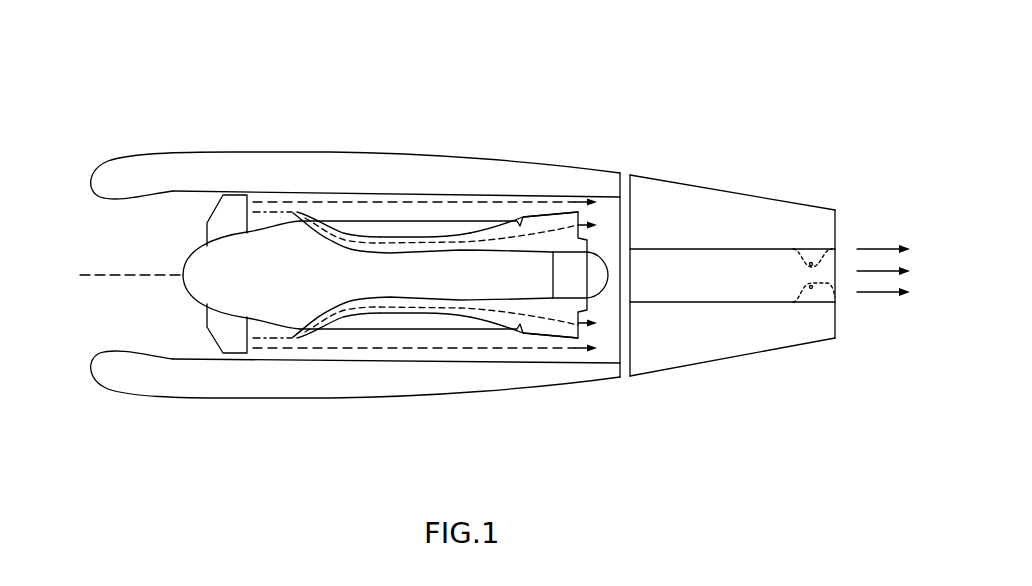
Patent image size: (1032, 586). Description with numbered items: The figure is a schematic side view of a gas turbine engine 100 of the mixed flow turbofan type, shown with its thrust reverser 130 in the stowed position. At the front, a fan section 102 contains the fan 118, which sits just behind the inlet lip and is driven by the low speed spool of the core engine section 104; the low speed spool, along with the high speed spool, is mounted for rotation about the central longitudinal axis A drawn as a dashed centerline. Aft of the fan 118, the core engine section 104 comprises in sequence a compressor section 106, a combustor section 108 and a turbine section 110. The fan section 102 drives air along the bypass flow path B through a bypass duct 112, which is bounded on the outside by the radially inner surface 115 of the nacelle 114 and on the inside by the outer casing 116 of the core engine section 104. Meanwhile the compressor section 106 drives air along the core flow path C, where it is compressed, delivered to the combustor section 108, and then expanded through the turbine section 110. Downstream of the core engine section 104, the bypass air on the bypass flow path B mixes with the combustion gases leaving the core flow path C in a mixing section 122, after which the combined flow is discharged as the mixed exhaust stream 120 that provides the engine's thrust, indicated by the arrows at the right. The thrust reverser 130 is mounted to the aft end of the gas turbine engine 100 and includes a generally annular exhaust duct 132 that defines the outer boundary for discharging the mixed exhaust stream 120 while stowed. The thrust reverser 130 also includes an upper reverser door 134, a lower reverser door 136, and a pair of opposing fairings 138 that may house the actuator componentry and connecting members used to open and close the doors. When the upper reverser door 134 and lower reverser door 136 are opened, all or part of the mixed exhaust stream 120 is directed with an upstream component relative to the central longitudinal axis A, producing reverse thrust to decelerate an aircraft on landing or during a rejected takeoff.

The gas turbine engine 100 is at (104, 100).
The fan section 102 is at (179, 218).
The core engine section 104 is at (320, 259).
The compressor section 106 is at (345, 218).
The combustor section 108 is at (442, 218).
The turbine section 110 is at (528, 201).
The bypass duct 112 is at (345, 350).
The nacelle 114 is at (196, 383).
The radially inner surface 115 is at (397, 361).
The outer casing 116 is at (437, 331).
The fan 118 is at (207, 340).
The mixed exhaust stream 120 is at (878, 249).
The mixing section 122 is at (605, 212).
The thrust reverser 130 is at (733, 238).
The exhaust duct 132 is at (830, 338).
The upper reverser door 134 is at (742, 196).
The lower reverser door 136 is at (702, 365).
The fairings 138 is at (770, 295).
The central longitudinal axis A is at (98, 276).
The bypass flow path B is at (293, 349).
The core flow path C is at (550, 316).